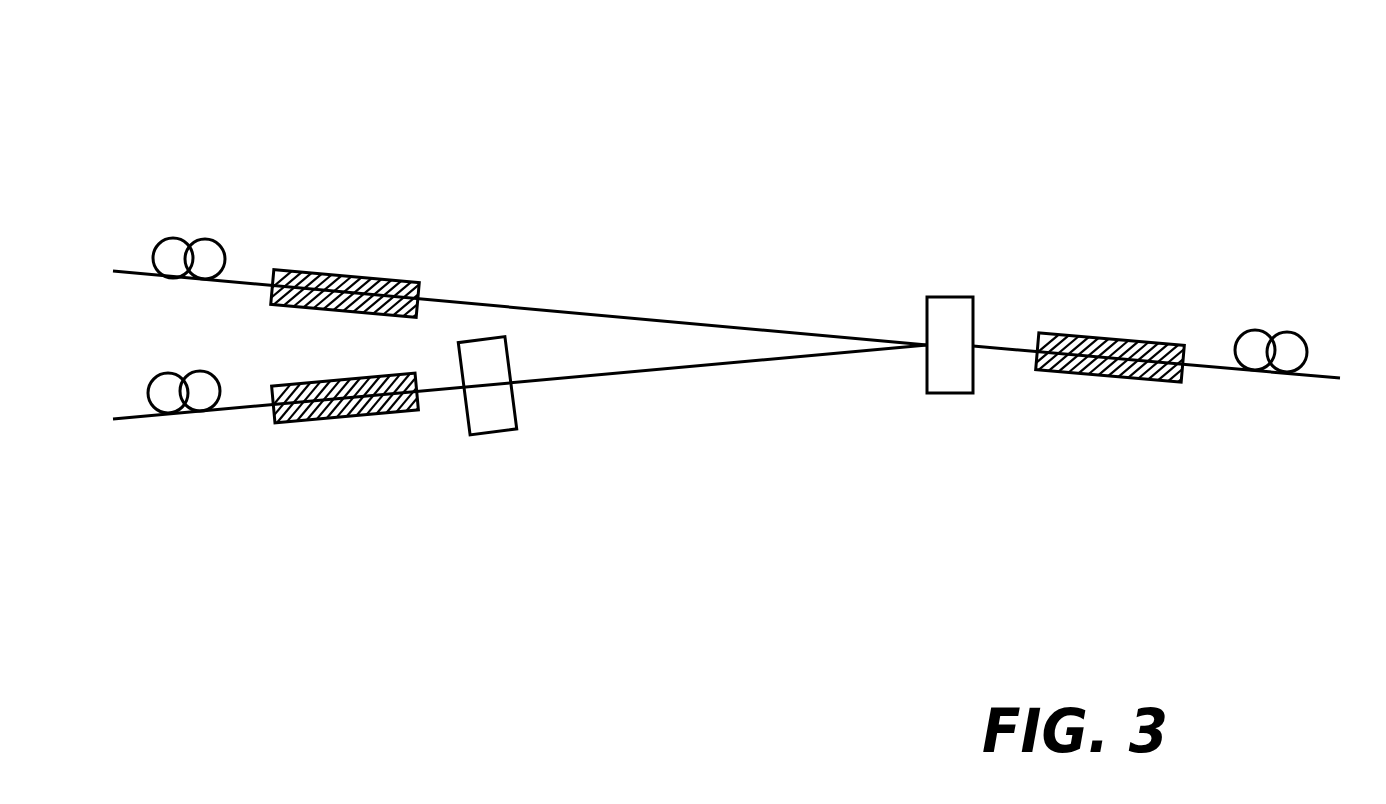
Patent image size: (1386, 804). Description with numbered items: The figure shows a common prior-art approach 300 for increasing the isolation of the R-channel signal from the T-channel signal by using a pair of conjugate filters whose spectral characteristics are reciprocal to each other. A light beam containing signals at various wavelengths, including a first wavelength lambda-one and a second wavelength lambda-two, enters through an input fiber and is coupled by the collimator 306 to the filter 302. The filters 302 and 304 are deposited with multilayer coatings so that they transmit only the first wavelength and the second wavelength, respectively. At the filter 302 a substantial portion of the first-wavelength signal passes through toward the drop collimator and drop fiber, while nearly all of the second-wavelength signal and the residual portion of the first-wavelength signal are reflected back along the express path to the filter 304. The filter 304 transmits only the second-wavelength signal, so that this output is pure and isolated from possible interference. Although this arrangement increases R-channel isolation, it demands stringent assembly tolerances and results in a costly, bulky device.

The optical add/drop module 300 is at (718, 274).
The filter 302 is at (945, 368).
The filter 304 is at (490, 411).
The collimator 306 is at (352, 250).